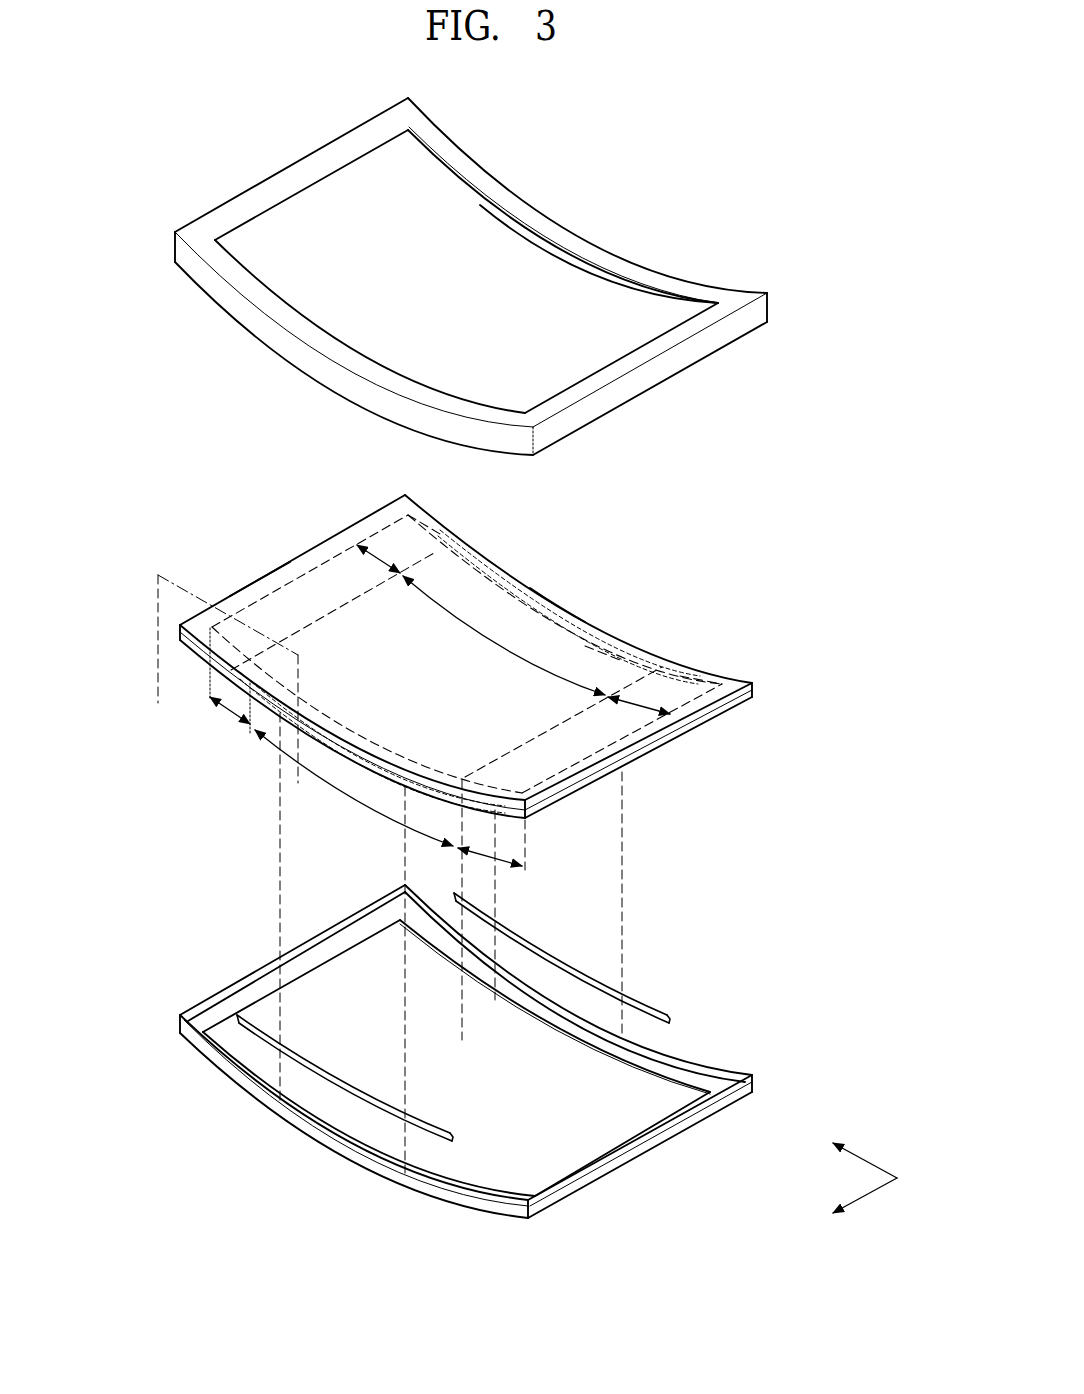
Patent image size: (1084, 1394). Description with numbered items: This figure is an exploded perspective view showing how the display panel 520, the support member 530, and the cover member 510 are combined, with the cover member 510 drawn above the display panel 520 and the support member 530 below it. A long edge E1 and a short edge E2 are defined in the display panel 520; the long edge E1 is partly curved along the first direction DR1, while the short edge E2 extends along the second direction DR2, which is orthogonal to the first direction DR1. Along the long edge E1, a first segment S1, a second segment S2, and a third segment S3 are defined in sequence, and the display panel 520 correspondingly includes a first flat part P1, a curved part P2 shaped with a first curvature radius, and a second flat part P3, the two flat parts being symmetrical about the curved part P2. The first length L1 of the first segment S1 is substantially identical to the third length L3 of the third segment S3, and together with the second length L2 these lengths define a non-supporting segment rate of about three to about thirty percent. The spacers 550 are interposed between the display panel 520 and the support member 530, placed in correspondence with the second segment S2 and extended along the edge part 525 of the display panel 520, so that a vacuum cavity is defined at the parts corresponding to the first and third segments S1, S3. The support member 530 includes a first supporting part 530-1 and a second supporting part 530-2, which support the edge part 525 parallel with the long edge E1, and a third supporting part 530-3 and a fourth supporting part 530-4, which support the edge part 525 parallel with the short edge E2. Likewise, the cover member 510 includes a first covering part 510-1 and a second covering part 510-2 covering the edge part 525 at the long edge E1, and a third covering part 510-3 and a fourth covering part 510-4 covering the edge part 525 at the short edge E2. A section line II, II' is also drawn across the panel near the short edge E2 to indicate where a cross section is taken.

The cover member 510 is at (471, 276).
The first covering part 510-1 is at (545, 228).
The second covering part 510-2 is at (360, 367).
The third covering part 510-3 is at (548, 388).
The fourth covering part 510-4 is at (278, 185).
The display panel 520 is at (643, 553).
The edge part 525 is at (313, 535).
The support member 530 is at (457, 1051).
The first supporting part 530-1 is at (697, 1065).
The second supporting part 530-2 is at (268, 1105).
The third supporting part 530-3 is at (597, 1175).
The fourth supporting part 530-4 is at (247, 980).
The spacers 550 is at (547, 948).
The first flat part P1 is at (422, 527).
The curved part P2 is at (602, 643).
The second flat part P3 is at (697, 678).
The long edge E1 is at (563, 610).
The short edge E2 is at (260, 578).
The first length L1 is at (376, 565).
The second length L2 is at (504, 635).
The third length L3 is at (639, 715).
The first segment S1 is at (230, 684).
The second segment S2 is at (354, 788).
The third segment S3 is at (490, 865).
The section line II is at (203, 655).
The section line II' is at (273, 739).
The first direction DR1 is at (847, 1154).
The second direction DR2 is at (847, 1205).